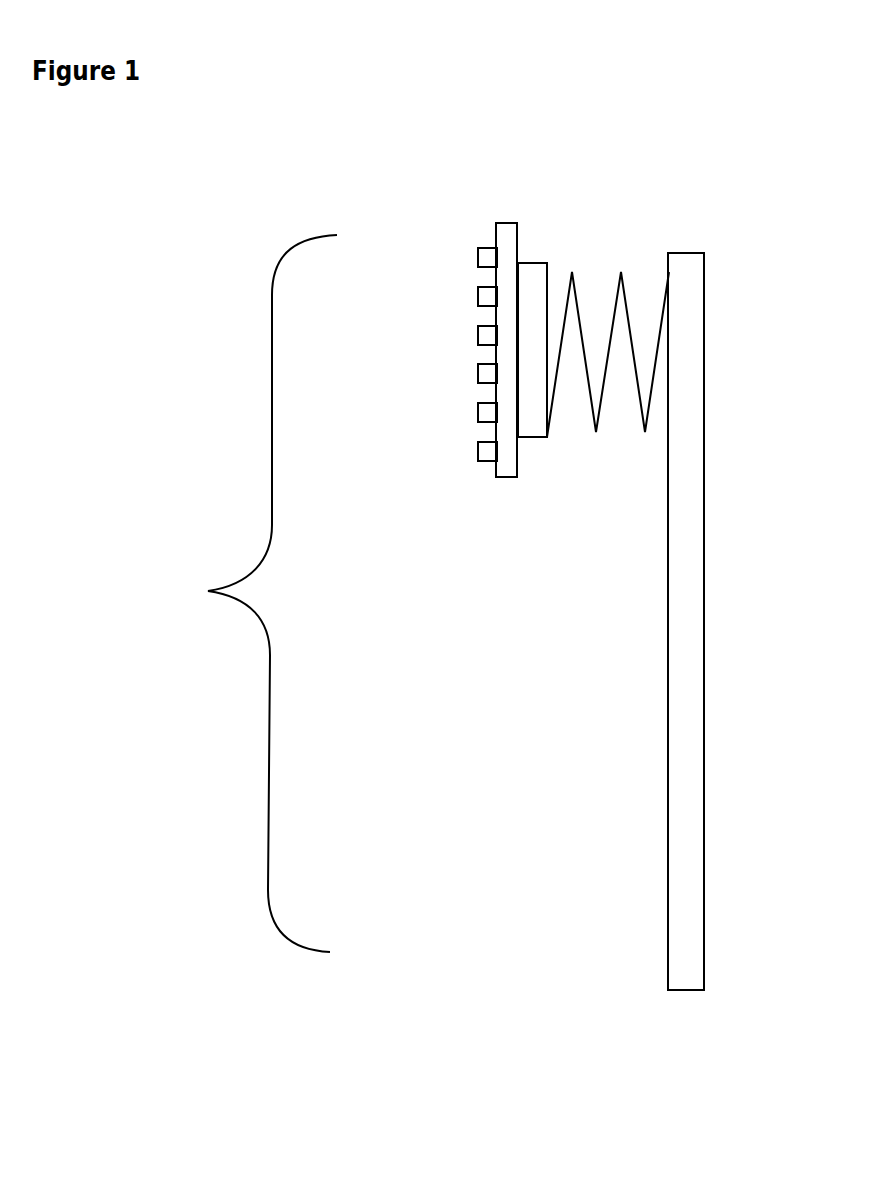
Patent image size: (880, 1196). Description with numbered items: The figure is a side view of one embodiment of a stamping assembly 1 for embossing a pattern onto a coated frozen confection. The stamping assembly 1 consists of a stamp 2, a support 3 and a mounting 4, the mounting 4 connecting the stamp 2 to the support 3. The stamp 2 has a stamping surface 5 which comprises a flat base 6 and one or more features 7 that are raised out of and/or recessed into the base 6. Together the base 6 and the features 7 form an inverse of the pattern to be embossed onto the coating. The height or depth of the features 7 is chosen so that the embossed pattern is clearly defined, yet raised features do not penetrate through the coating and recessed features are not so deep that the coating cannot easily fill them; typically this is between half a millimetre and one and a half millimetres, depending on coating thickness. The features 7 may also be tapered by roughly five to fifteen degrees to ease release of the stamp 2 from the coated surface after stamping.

The stamping assembly 1 is at (217, 593).
The stamp 2 is at (551, 170).
The support 3 is at (682, 903).
The mounting 4 is at (593, 279).
The stamping surface 5 is at (456, 231).
The flat base 6 is at (509, 477).
The features 7 is at (470, 258).